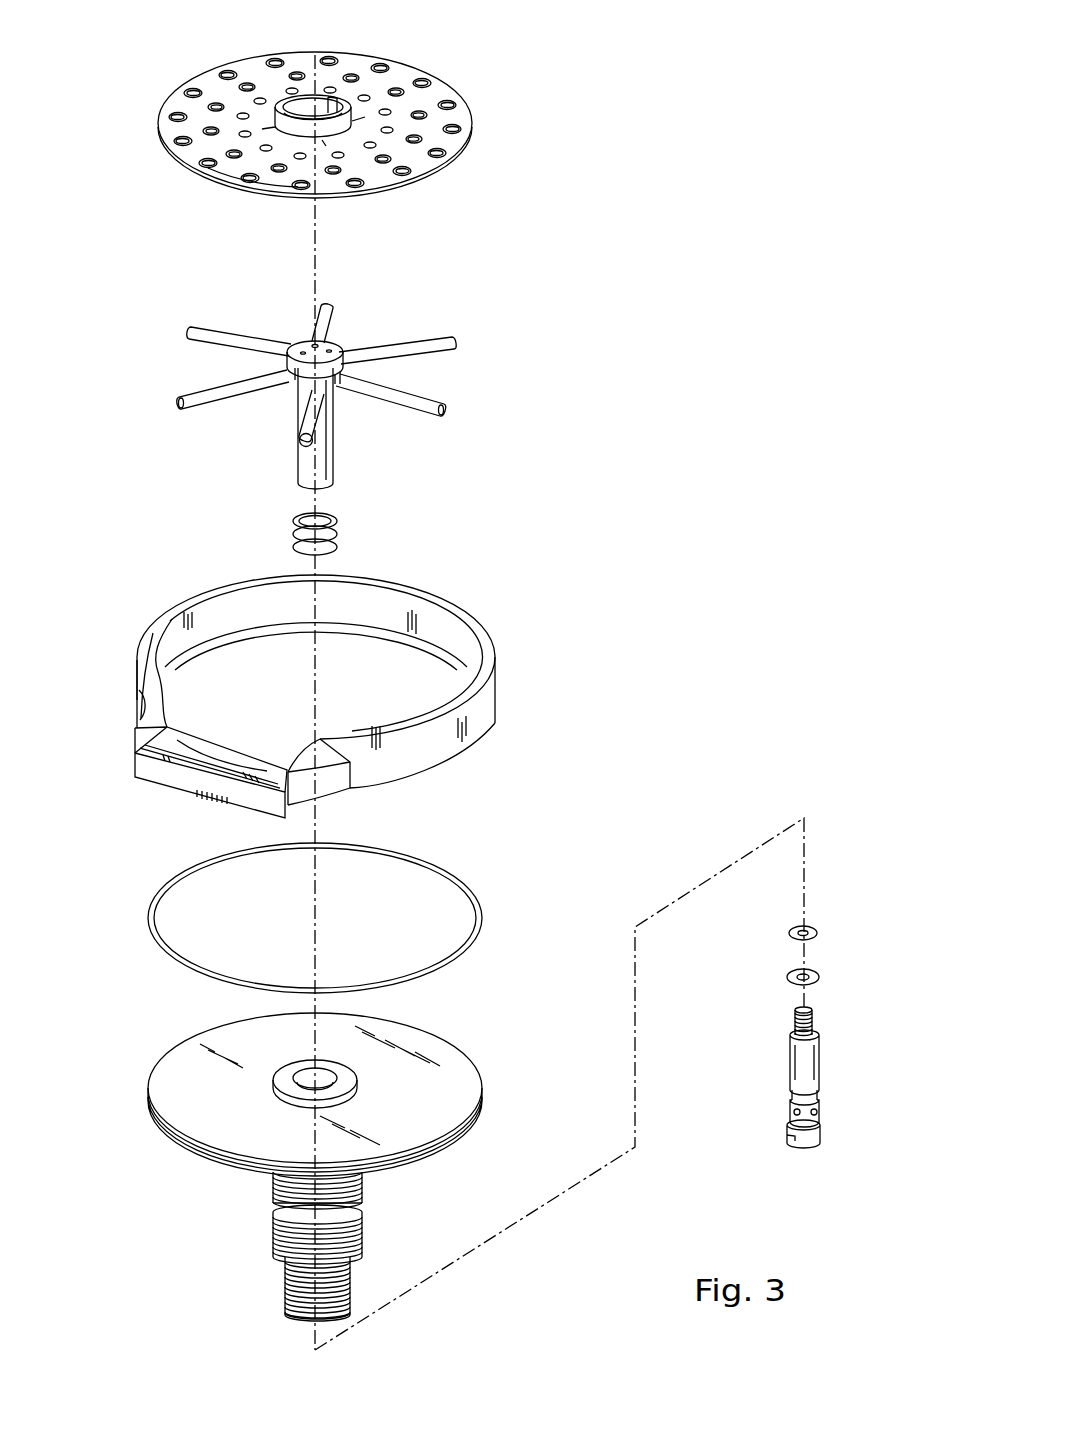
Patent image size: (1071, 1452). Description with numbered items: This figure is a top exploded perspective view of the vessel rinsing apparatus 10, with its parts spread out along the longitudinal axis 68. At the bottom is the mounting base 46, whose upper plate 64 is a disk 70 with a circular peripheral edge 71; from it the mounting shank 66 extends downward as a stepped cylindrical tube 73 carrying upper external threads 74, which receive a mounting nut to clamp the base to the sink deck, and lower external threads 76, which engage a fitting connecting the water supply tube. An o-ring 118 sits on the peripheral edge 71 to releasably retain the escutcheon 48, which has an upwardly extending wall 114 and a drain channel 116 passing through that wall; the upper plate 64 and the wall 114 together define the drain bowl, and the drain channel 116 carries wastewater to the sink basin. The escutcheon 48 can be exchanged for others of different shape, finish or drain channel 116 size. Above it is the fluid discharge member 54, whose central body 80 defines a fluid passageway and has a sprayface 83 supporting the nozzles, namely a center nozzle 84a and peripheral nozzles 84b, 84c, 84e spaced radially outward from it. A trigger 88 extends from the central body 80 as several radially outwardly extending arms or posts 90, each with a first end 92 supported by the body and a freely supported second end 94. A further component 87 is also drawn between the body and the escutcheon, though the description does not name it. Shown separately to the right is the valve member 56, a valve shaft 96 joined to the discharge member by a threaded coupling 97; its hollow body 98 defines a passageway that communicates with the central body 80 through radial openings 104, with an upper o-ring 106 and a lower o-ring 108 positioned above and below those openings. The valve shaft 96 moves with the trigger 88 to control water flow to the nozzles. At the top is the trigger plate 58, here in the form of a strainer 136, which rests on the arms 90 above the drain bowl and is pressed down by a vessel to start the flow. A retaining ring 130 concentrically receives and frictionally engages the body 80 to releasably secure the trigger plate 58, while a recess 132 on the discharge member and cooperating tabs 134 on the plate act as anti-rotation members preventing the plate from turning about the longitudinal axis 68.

The vessel rinsing apparatus 10 is at (769, 158).
The mounting base 46 is at (124, 1212).
The escutcheon 48 is at (515, 665).
The fluid discharge member 54 is at (414, 298).
The valve member 56 is at (872, 1105).
The trigger plate 58 is at (445, 68).
The upper plate 64 is at (462, 1050).
The mounting shank 66 is at (362, 1228).
The longitudinal axis 68 is at (310, 922).
The disk 70 is at (175, 1080).
The circular peripheral edge 71 is at (172, 1130).
The stepped cylindrical tube 73 is at (285, 1285).
The upper external threads 74 is at (272, 1222).
The lower external threads 76 is at (350, 1285).
The central body 80 is at (330, 458).
The sprayface 83 is at (333, 340).
The center nozzle 84a is at (313, 340).
The peripheral nozzle 84b is at (298, 362).
The peripheral nozzle 84c is at (305, 348).
The peripheral nozzle 84e is at (337, 352).
The spring 87 is at (320, 535).
The trigger 88 is at (224, 420).
The arms or posts 90 is at (192, 393).
The first end 92 is at (338, 387).
The second end 94 is at (180, 405).
The valve pin or shaft 96 is at (820, 1058).
The threaded coupling 97 is at (792, 1022).
The hollow body 98 is at (792, 1066).
The radial openings 104 is at (794, 1113).
The upper o-ring 106 is at (818, 933).
The lower o-ring 108 is at (788, 975).
The upwardly extending wall 114 is at (140, 635).
The drain channel 116 is at (182, 772).
The o-ring 118 is at (483, 914).
The retaining ring 130 is at (333, 104).
The recess 132 is at (293, 382).
The tabs 134 is at (300, 98).
The strainer 136 is at (488, 124).